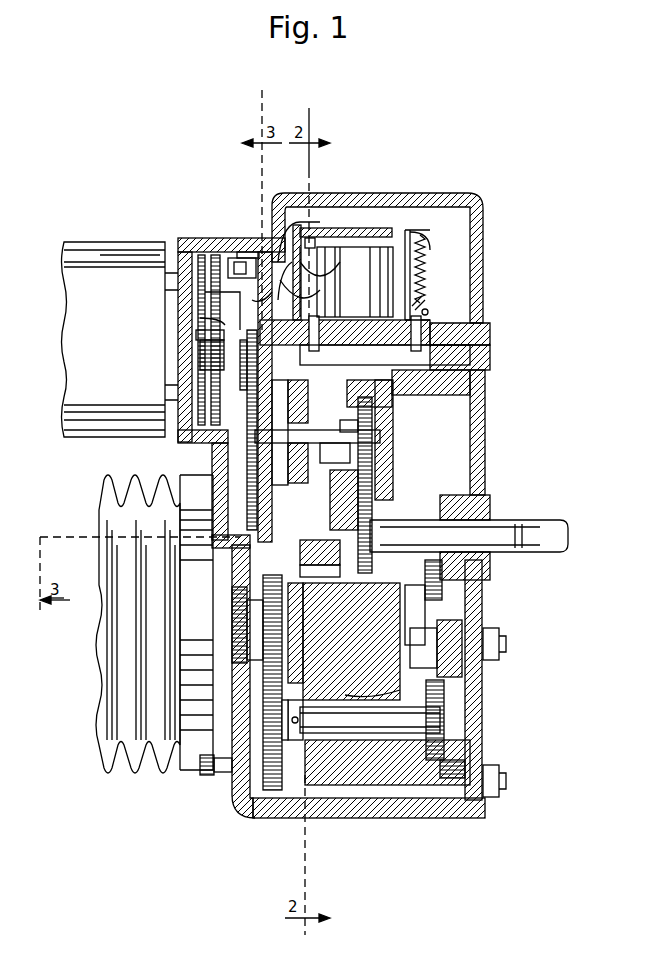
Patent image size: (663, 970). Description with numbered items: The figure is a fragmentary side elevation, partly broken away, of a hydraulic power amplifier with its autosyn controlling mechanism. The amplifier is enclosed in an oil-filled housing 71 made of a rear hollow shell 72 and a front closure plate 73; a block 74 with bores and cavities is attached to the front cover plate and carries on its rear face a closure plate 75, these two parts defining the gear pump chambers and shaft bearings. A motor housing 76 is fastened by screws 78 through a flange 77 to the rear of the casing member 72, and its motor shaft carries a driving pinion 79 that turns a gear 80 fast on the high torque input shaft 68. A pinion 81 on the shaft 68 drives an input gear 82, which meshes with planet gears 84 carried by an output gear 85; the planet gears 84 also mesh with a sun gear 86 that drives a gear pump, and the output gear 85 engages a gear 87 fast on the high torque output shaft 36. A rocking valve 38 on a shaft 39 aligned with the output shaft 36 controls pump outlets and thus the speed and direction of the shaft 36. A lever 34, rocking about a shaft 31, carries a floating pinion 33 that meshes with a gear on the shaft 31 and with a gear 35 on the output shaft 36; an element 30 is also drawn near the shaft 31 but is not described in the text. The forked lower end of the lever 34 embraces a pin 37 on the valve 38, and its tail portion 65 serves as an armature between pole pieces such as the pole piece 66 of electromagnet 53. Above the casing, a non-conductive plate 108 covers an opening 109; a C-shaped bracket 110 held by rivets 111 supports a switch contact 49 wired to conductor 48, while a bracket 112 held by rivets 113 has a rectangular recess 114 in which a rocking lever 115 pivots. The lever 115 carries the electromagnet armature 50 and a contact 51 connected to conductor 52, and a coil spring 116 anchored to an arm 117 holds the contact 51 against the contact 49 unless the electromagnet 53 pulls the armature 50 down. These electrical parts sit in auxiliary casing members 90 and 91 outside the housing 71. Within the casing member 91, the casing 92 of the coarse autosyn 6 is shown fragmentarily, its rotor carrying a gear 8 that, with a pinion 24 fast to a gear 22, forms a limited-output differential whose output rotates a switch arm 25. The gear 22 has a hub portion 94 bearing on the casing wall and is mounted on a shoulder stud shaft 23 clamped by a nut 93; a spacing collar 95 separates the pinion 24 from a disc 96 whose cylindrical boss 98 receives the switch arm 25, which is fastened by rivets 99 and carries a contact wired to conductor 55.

The casing 92 is at (74, 240).
The autosyn 6 is at (112, 240).
The casing member 91 is at (185, 240).
The gear 22 is at (201, 255).
The gear 8 is at (216, 255).
The spacing collar 95 is at (238, 250).
The switch arm 25 is at (205, 288).
The pinion 24 is at (200, 308).
The nut 93 is at (196, 334).
The hub portion 94 is at (200, 362).
The disc 96 is at (250, 333).
The shaft 23 is at (269, 397).
The cylindrical boss 98 is at (185, 420).
The rivets 99 is at (220, 428).
The casing member 90 is at (470, 193).
The plate 108 is at (478, 325).
The opening 109 is at (445, 355).
The rivets 111 is at (345, 333).
The rivets 113 is at (402, 333).
The electromagnet 53 is at (428, 263).
The conductor 52 is at (323, 258).
The conductor 55 is at (317, 285).
The C-shaped bracket 110 is at (305, 296).
The contact 51 is at (322, 232).
The electromagnet armature 50 is at (376, 242).
The conductor 48 is at (292, 220).
The switch contact 49 is at (330, 228).
The rectangular recess 114 is at (412, 228).
The rocking lever 115 is at (400, 228).
The coil spring 116 is at (427, 252).
The arm 117 is at (422, 300).
The bracket 112 is at (420, 306).
The tail portion 65 is at (378, 358).
The pole piece 66 is at (431, 382).
The lever 34 is at (322, 377).
The shaft 31 is at (255, 474).
The gear 30 is at (255, 480).
The pin 37 is at (333, 500).
The gear 87 is at (372, 478).
The gear 35 is at (393, 495).
The floating pinion 33 is at (372, 448).
The output shaft 36 is at (550, 522).
The shaft 39 is at (305, 548).
The rocking valve 38 is at (300, 575).
The closure plate 75 is at (312, 655).
The output gear 85 is at (361, 682).
The high torque input shaft 68 is at (330, 735).
The gear 80 is at (268, 820).
The driving pinion 79 is at (240, 612).
The planet gears 84 is at (445, 580).
The input gear 82 is at (478, 602).
The sun gear 86 is at (460, 620).
The pinion 81 is at (444, 710).
The front closure plate 73 is at (482, 730).
The motor housing 76 is at (100, 765).
The screws 78 is at (200, 770).
The flange 77 is at (218, 790).
The housing 71 is at (240, 816).
The rear hollow shell 72 is at (296, 818).
The block 74 is at (365, 818).